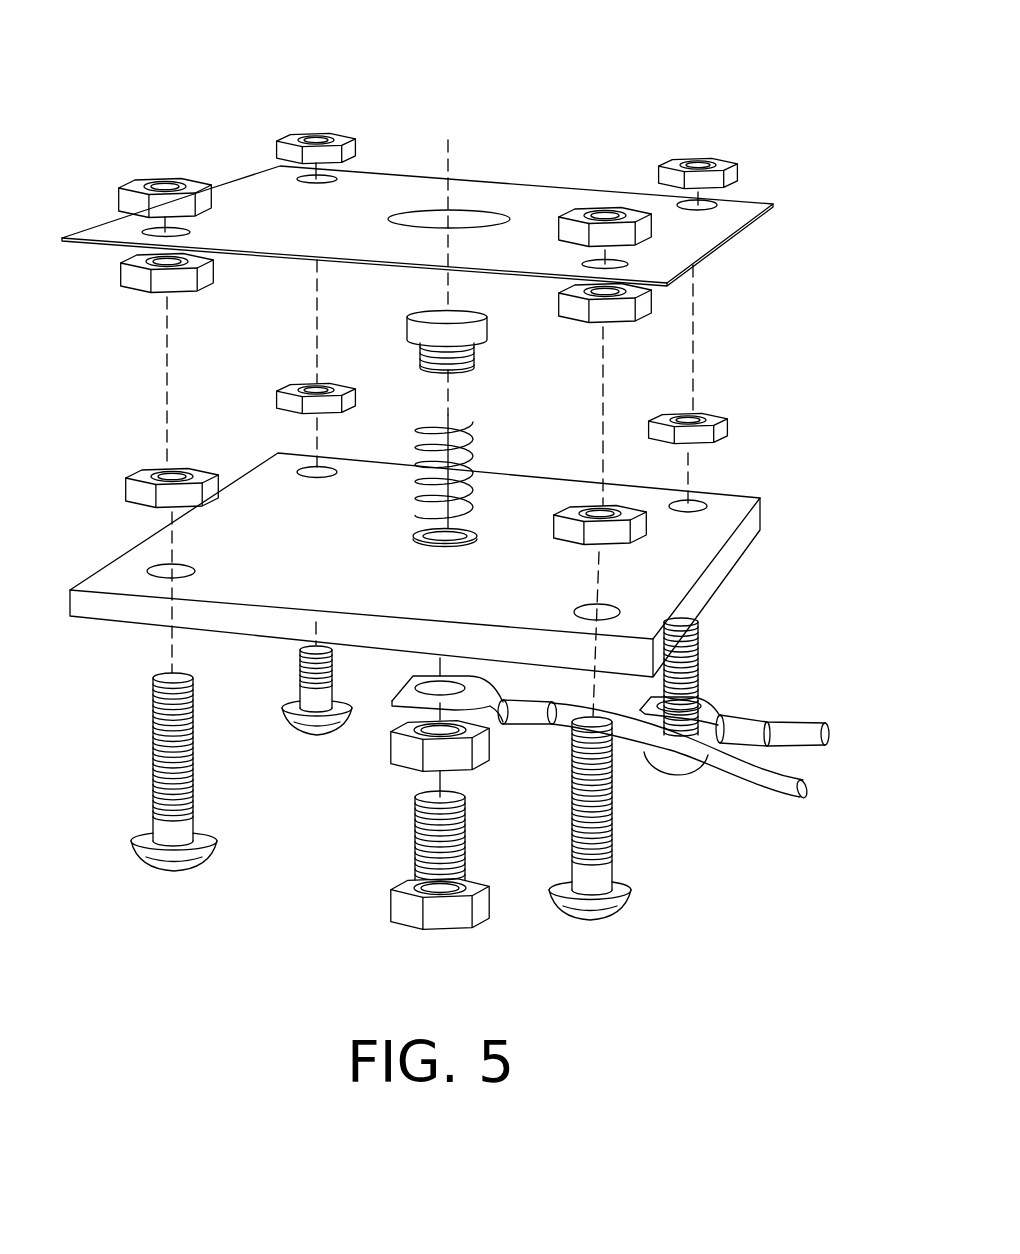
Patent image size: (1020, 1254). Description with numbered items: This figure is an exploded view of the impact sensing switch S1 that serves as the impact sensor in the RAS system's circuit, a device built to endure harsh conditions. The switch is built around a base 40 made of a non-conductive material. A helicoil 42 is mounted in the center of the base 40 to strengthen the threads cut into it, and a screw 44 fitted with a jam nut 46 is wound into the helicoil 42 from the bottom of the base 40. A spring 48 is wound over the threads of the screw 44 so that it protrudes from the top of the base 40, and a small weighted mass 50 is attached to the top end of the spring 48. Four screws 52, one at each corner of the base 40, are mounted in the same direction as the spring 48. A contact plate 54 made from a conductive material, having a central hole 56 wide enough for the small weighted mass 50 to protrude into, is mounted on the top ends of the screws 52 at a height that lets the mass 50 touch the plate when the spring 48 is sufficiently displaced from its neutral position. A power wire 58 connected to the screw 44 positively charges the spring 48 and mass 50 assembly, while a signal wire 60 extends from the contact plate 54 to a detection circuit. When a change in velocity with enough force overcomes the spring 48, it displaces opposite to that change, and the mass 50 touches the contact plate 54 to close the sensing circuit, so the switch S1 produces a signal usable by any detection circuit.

The impact sensing switch S1 is at (763, 78).
The base 40 is at (742, 555).
The helicoil 42 is at (410, 538).
The screw 44 is at (403, 848).
The jam nut 46 is at (390, 750).
The spring 48 is at (475, 438).
The small weighted mass 50 is at (407, 330).
The screws 52 is at (153, 735).
The contact plate 54 is at (755, 216).
The central hole 56 is at (498, 212).
The power wire 58 is at (780, 798).
The signal wire 60 is at (802, 722).